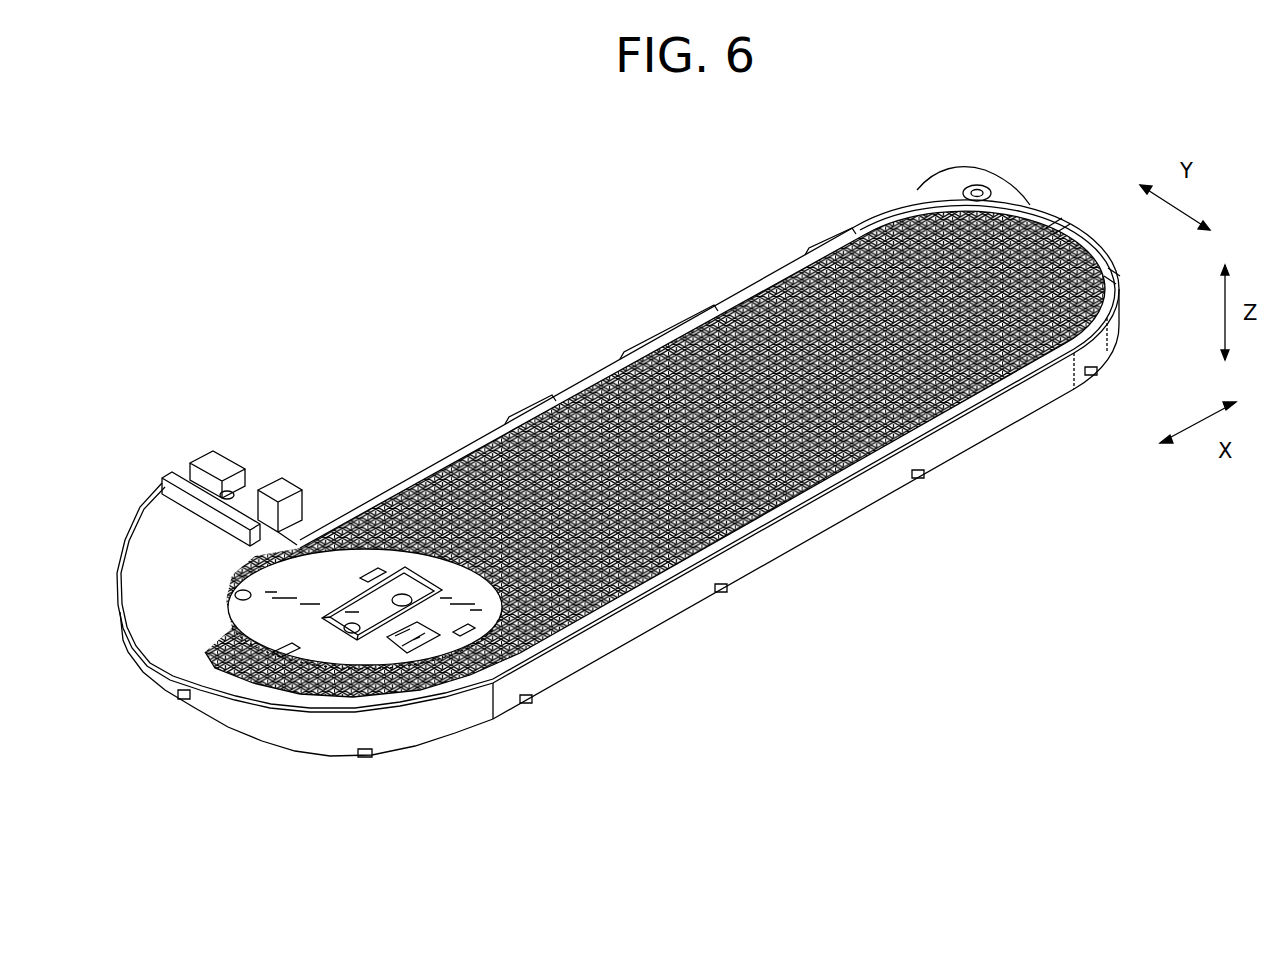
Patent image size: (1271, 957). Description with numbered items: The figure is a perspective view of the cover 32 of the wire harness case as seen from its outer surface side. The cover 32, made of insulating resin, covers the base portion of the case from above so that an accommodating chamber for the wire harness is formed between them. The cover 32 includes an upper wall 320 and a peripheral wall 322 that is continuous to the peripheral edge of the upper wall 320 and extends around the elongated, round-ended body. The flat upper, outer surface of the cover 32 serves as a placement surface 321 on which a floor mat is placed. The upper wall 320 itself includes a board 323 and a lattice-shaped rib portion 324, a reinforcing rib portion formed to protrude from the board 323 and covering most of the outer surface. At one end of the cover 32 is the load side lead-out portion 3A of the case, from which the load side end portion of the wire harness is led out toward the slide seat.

The load side lead-out portion 3A is at (247, 478).
The cover 32 is at (1116, 350).
The upper wall 320 is at (1106, 515).
The placement surface 321 is at (1019, 214).
The peripheral wall 322 is at (1118, 326).
The board 323 is at (1120, 274).
The lattice-shaped rib portion 324 is at (1060, 224).